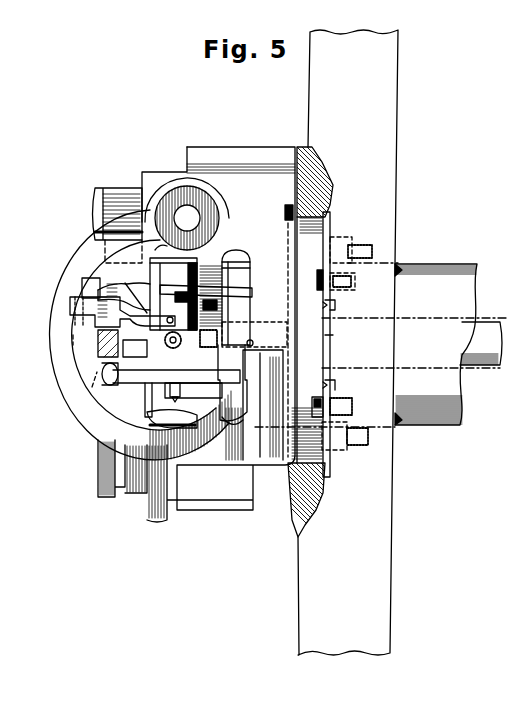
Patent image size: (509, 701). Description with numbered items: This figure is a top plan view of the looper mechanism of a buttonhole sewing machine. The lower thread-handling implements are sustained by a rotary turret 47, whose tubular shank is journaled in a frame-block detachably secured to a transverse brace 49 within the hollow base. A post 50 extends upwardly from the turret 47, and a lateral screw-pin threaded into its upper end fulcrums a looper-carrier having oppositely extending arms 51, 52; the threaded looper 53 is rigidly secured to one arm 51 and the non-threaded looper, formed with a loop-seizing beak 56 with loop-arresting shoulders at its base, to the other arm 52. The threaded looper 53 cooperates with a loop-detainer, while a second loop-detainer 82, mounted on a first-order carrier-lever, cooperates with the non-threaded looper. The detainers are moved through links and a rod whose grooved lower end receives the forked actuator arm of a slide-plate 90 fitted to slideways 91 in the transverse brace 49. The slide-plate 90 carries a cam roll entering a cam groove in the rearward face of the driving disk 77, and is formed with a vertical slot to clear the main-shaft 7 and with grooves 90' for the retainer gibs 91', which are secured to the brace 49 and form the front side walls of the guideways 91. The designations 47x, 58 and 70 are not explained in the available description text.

The transverse brace 49 is at (394, 115).
The main-shaft 7 is at (478, 331).
The driving disk 77 is at (317, 238).
The slideways 91 is at (337, 326).
The retainer gibs 91' is at (349, 428).
The slide-plate 90 is at (345, 345).
The grooves 90' is at (314, 347).
The rotary turret 47 is at (92, 387).
The ring portion 47x is at (100, 355).
The loop-seizing beak 56 is at (187, 285).
The lever 58 is at (203, 303).
The looper-carrier arm 52 is at (208, 330).
The post 50 is at (272, 323).
The looper-carrier arm 51 is at (238, 378).
The threaded looper 53 is at (147, 412).
The second loop-detainer 82 is at (143, 384).
The bracket 70 is at (97, 320).